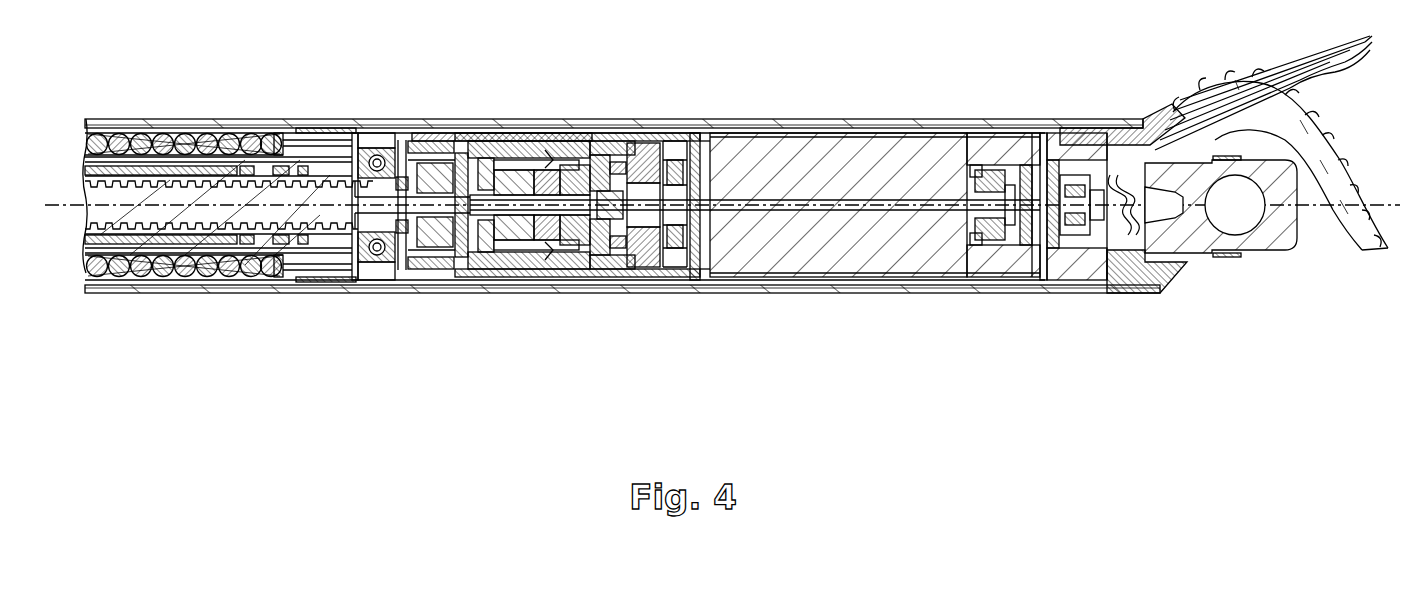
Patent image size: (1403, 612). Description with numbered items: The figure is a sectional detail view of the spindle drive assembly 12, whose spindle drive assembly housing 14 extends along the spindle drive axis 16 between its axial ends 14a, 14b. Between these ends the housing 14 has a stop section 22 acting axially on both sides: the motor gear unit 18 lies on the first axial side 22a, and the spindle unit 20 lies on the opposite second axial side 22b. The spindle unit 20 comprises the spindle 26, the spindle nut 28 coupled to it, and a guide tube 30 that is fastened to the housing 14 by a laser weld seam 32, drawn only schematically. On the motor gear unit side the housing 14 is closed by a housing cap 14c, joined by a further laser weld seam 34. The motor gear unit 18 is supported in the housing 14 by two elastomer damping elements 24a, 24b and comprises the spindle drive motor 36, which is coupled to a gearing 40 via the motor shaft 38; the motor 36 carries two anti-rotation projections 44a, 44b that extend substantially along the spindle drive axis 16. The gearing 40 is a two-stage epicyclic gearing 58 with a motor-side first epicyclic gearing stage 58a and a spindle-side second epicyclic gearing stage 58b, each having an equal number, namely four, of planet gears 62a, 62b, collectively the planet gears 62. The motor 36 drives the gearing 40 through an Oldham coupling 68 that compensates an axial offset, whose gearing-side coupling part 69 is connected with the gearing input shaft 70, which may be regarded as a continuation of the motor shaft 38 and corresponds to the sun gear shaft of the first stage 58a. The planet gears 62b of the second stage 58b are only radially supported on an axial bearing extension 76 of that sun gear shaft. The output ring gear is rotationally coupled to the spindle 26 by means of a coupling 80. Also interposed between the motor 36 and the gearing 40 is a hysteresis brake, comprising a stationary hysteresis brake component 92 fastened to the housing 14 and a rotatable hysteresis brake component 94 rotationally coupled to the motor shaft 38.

The spindle drive assembly 12 is at (651, 92).
The spindle drive assembly housing 14 is at (745, 292).
The axial end 14a is at (94, 107).
The axial end 14b is at (1108, 128).
The housing cap 14c is at (1188, 245).
The spindle drive axis 16 is at (60, 203).
The motor gear unit 18 is at (849, 88).
The spindle unit 20 is at (200, 103).
The stop section 22 is at (398, 270).
The first axial side 22a is at (419, 290).
The second axial side 22b is at (376, 120).
The damping element 24a is at (418, 120).
The damping element 24b is at (1100, 275).
The spindle 26 is at (127, 215).
The spindle nut 28 is at (300, 248).
The guide tube 30 is at (184, 139).
The laser weld seam 32 is at (373, 270).
The laser weld seam 34 is at (1125, 282).
The spindle drive motor 36 is at (870, 205).
The motor shaft 38 is at (743, 200).
The gearing 40 is at (578, 211).
The anti-rotation projection 44a is at (1066, 275).
The anti-rotation projection 44b is at (1070, 128).
The two-stage epicyclic gearing 58 is at (578, 211).
The first epicyclic gearing stage 58a is at (576, 106).
The second epicyclic gearing stage 58b is at (466, 110).
The planet gears 62 is at (522, 205).
The planet gear 62a is at (540, 132).
The planet gear 62b is at (515, 265).
The coupling 68 is at (676, 108).
The gearing-side coupling part 69 is at (615, 132).
The gearing input shaft 70 is at (585, 268).
The axial bearing extension 76 is at (508, 142).
The coupling 80 is at (428, 110).
The stationary hysteresis brake component 92 is at (652, 270).
The rotatable hysteresis brake component 94 is at (645, 265).